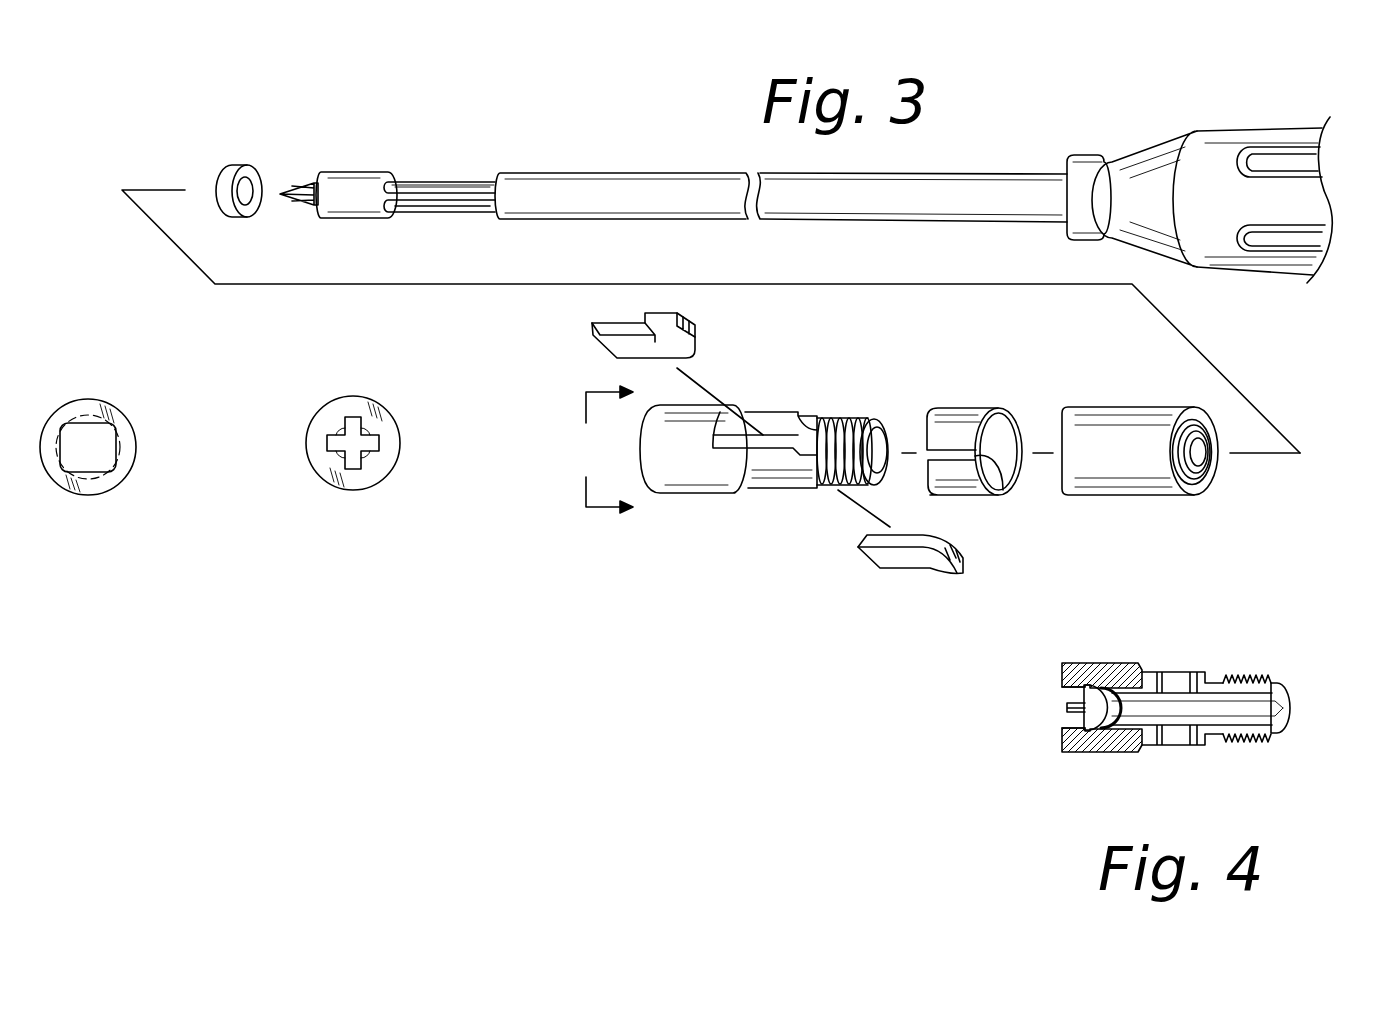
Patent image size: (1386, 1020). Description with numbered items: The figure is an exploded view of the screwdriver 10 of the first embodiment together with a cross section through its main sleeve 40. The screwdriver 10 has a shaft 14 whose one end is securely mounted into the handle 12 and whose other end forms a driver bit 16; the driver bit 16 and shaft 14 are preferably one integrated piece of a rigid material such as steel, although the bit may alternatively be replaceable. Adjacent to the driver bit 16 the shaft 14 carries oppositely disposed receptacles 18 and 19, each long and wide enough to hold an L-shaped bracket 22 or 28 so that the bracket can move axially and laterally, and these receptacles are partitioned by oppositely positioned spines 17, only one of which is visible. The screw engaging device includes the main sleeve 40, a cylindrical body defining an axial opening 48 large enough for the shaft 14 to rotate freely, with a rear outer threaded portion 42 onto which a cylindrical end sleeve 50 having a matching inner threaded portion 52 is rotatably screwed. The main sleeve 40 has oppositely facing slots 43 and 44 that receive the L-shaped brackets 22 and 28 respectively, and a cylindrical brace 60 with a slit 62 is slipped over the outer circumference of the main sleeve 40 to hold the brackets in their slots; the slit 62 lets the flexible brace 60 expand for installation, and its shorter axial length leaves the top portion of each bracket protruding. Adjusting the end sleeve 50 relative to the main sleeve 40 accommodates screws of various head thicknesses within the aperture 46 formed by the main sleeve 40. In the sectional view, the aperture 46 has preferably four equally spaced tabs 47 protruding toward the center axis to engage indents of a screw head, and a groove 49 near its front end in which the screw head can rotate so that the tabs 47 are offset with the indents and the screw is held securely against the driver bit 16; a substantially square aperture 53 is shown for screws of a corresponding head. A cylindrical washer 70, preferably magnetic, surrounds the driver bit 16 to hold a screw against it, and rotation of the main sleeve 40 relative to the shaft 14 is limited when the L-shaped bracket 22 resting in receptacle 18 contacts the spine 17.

In FIG. 3, the screwdriver 10 is at (650, 135).
In FIG. 3, the handle 12 is at (1218, 148).
In FIG. 3, the shaft 14 is at (988, 178).
In FIG. 3, the driver bit 16 is at (302, 188).
In FIG. 3, the spine 17 is at (415, 192).
In FIG. 3, the receptacle 18 is at (480, 183).
In FIG. 3, the receptacle 19 is at (455, 212).
In FIG. 3, the L-shaped bracket 22 is at (698, 330).
In FIG. 3, the L-shaped bracket 28 is at (930, 572).
In FIG. 3, the main sleeve 40 is at (483, 552).
In FIG. 4, the main sleeve 40 is at (1180, 620).
In FIG. 3, the outer threaded portion 42 is at (845, 420).
In FIG. 3, the slot 43 is at (780, 433).
In FIG. 4, the slot 43 is at (1190, 680).
In FIG. 4, the slot 44 is at (1180, 745).
In FIG. 4, the aperture 46 is at (1040, 703).
In FIG. 3, the tabs 47 is at (342, 432).
In FIG. 4, the tabs 47 is at (1067, 707).
In FIG. 3, the axial opening 48 is at (877, 443).
In FIG. 4, the axial opening 48 is at (1290, 708).
In FIG. 4, the groove 49 is at (1110, 662).
In FIG. 3, the end sleeve 50 is at (1105, 398).
In FIG. 3, the inner threaded portion 52 is at (1212, 465).
In FIG. 3, the square aperture 53 is at (60, 447).
In FIG. 3, the cylindrical brace 60 is at (978, 392).
In FIG. 3, the slit 62 is at (1003, 490).
In FIG. 3, the cylindrical washer 70 is at (240, 166).